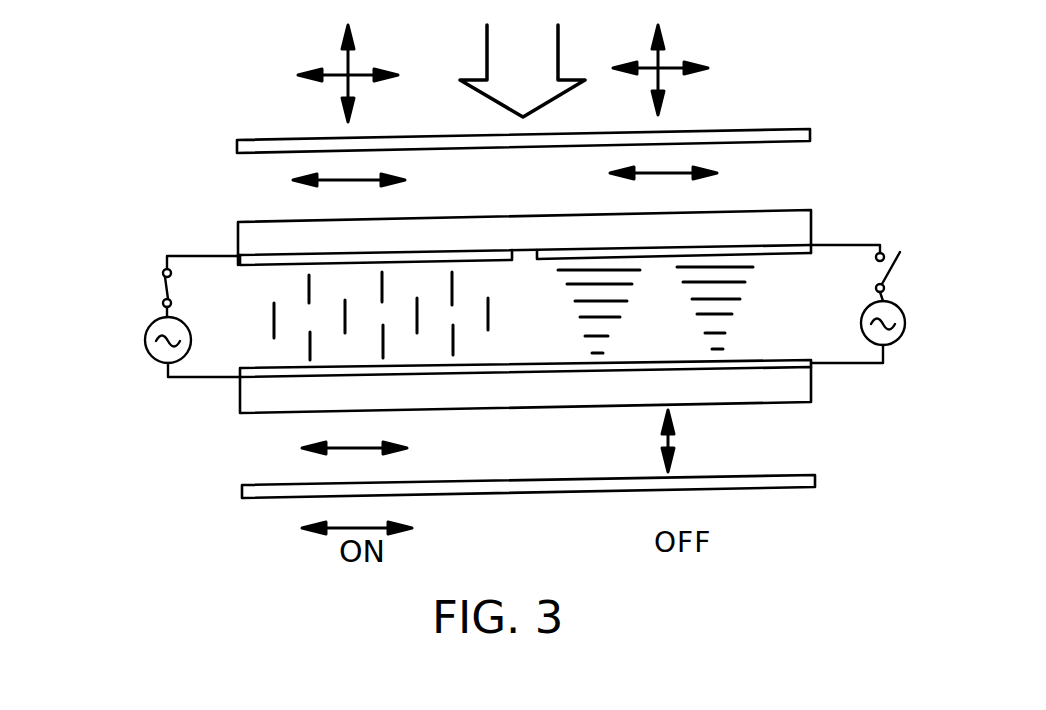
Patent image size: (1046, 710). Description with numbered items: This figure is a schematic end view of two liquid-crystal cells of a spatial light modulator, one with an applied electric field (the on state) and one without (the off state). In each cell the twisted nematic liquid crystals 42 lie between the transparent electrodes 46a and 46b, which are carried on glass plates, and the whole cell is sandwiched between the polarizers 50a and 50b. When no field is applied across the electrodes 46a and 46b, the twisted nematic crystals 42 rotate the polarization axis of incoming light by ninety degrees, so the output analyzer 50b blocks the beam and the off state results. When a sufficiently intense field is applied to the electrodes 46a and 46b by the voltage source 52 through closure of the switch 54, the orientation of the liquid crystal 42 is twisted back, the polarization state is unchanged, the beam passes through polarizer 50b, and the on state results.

The twisted nematic liquid crystals 42 is at (517, 327).
The transparent electrode 46a is at (266, 266).
The transparent electrode 46b is at (249, 372).
The polarizer 50a is at (267, 140).
The polarizer 50b is at (268, 500).
The voltage source 52 is at (146, 347).
The switch 54 is at (124, 284).